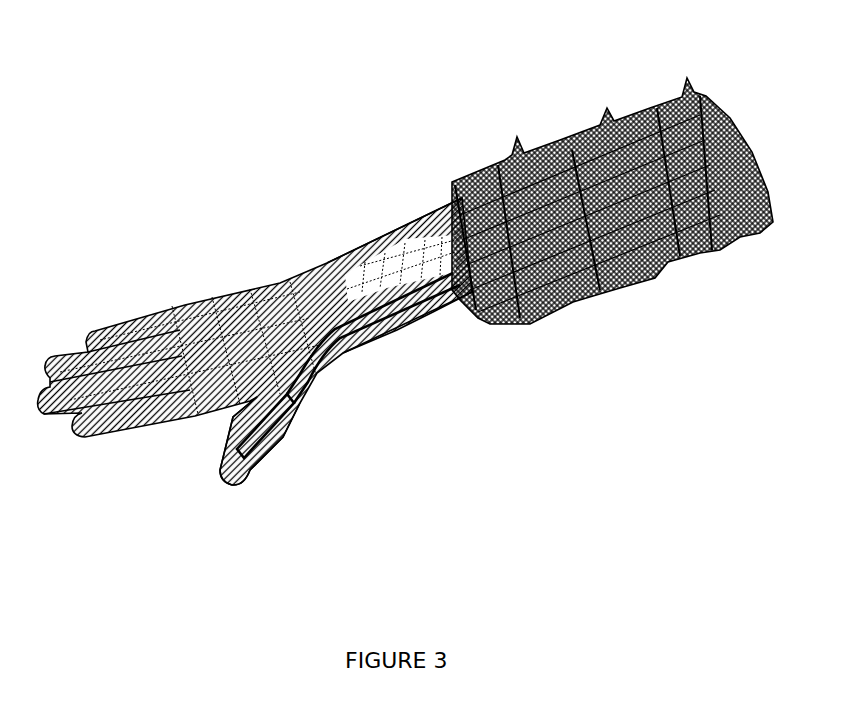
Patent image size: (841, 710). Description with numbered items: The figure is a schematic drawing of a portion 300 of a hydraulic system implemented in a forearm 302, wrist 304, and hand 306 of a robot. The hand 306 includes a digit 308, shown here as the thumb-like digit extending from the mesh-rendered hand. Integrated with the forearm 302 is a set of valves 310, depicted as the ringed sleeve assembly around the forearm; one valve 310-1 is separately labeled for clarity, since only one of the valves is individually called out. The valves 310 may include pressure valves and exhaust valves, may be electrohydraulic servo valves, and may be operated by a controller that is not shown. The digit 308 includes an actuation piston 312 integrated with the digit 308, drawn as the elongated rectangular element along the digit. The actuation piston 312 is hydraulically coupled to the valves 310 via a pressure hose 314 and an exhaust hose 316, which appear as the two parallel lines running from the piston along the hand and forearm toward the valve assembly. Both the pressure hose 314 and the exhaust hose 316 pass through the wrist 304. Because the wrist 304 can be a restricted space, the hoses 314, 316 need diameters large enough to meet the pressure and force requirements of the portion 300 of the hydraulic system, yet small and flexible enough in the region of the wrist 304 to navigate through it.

The portion of hydraulic system 300 is at (88, 67).
The forearm 302 is at (697, 57).
The wrist 304 is at (315, 250).
The hand 306 is at (298, 217).
The digit 308 is at (253, 465).
The set of valves 310 is at (753, 262).
The valve 310-1 is at (457, 198).
The actuation piston 312 is at (280, 427).
The pressure hose 314 is at (393, 320).
The exhaust hose 316 is at (443, 300).